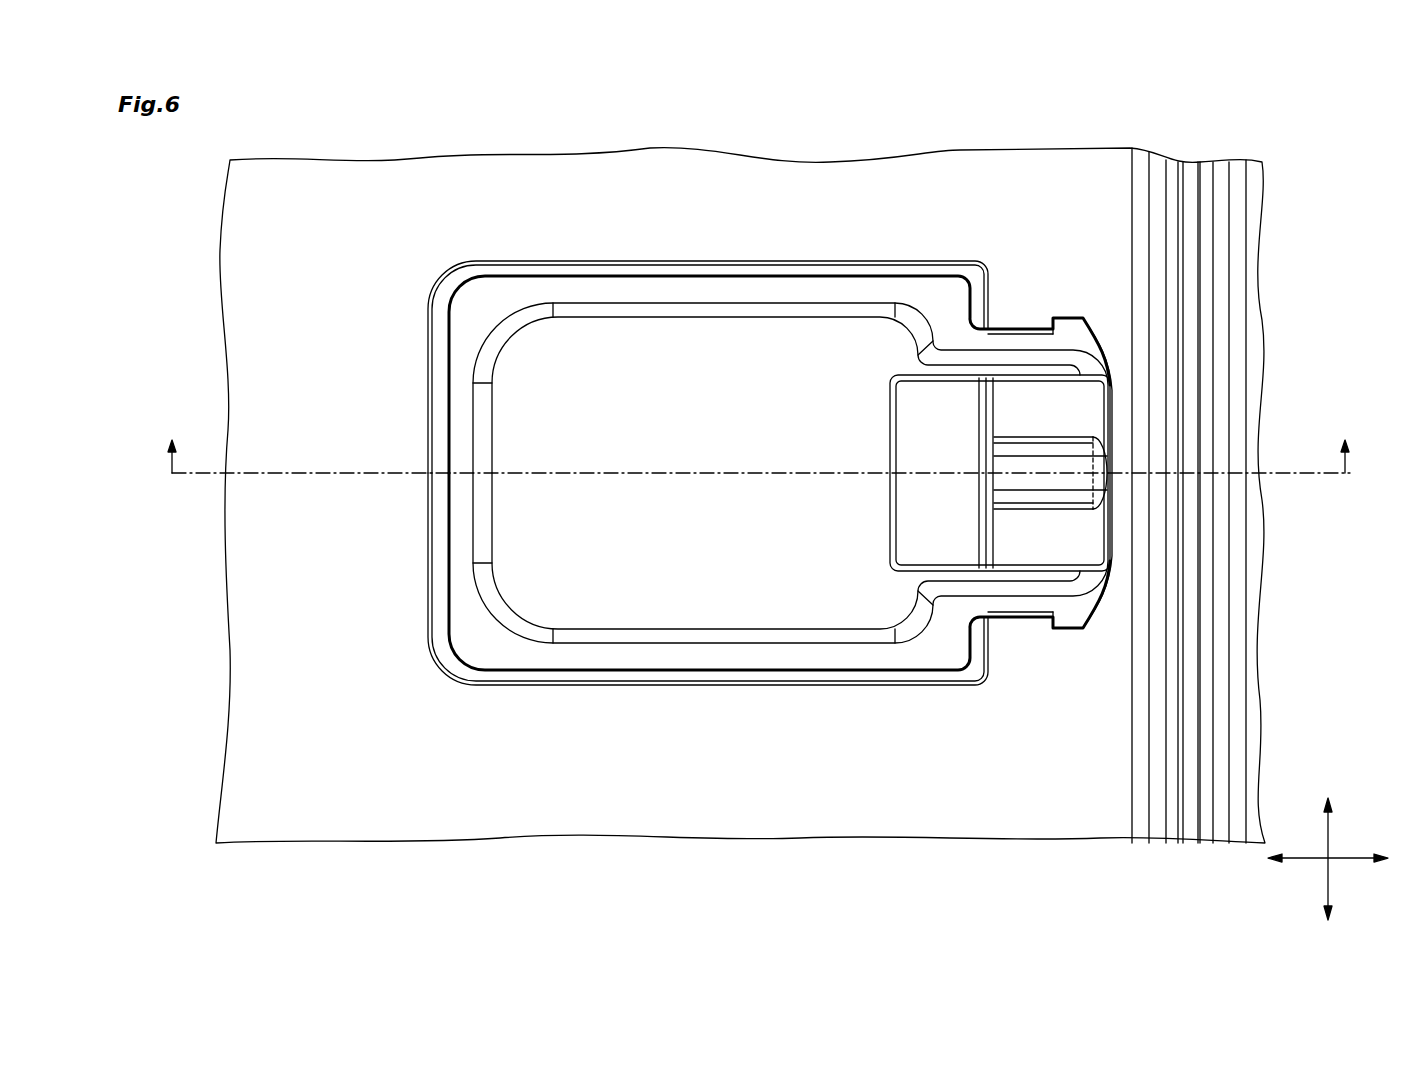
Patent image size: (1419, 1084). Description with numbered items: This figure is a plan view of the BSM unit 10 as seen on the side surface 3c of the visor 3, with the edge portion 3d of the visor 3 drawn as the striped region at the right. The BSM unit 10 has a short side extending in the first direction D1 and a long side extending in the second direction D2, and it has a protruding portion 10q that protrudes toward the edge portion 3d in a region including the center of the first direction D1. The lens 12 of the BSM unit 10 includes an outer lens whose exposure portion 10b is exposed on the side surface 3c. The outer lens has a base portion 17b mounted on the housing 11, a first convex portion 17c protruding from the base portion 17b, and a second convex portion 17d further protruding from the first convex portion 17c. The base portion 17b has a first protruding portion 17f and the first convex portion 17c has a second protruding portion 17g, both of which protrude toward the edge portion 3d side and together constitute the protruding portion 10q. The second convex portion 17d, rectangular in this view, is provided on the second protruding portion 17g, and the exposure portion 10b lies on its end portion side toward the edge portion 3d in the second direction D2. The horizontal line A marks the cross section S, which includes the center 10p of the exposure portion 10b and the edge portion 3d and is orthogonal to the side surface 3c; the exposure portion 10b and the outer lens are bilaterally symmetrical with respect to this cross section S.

The visor 3 is at (955, 154).
The side surface 3c is at (720, 782).
The edge portion 3d is at (1193, 485).
The BSM unit 10 is at (1055, 209).
The exposure portion 10b is at (1079, 400).
The center 10p is at (1046, 480).
The protruding portion 10q is at (1098, 603).
The housing 11 is at (676, 260).
The lens 12 is at (734, 360).
The base portion 17b is at (476, 640).
The first convex portion 17c is at (580, 605).
The second convex portion 17d is at (918, 538).
The first protruding portion 17f is at (1020, 605).
The second protruding portion 17g is at (1072, 612).
The cross section S is at (1178, 470).
The line A- A is at (758, 442).
The first direction D1 is at (1330, 836).
The second direction D2 is at (1312, 862).